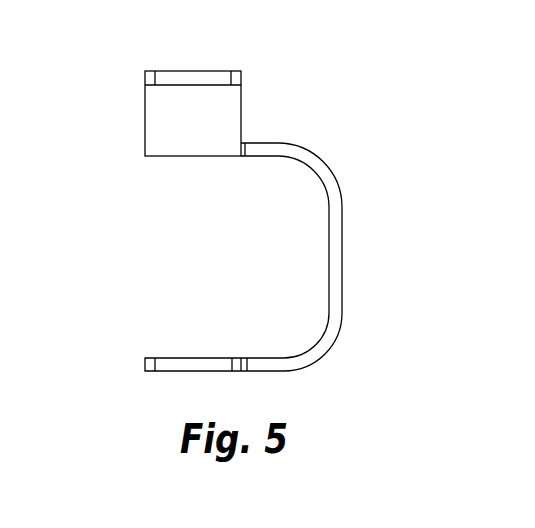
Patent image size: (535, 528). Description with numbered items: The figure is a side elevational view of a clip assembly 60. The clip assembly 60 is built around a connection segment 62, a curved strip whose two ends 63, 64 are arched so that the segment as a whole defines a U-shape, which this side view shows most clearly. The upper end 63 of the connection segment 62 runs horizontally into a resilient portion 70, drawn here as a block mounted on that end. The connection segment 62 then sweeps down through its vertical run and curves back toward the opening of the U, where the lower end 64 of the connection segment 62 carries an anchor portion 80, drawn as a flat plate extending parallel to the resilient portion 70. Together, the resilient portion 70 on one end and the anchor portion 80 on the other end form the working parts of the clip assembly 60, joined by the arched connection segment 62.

The clip assembly 60 is at (280, 67).
The connection segment 62 is at (337, 254).
The end of connection segment 63 is at (275, 149).
The end of connection segment 64 is at (288, 365).
The resilient portion 70 is at (158, 132).
The anchor portion 80 is at (190, 366).